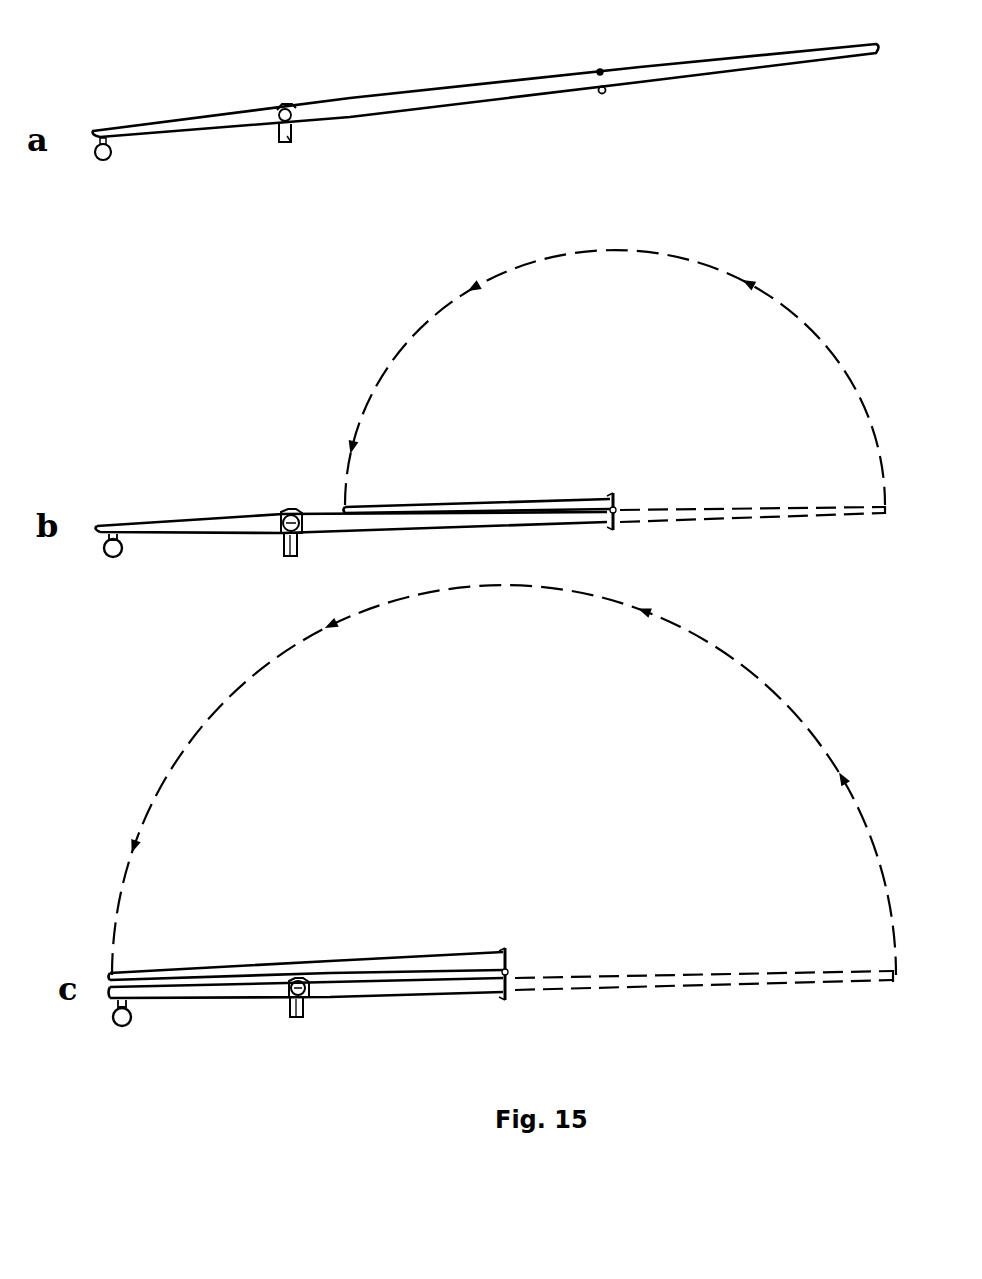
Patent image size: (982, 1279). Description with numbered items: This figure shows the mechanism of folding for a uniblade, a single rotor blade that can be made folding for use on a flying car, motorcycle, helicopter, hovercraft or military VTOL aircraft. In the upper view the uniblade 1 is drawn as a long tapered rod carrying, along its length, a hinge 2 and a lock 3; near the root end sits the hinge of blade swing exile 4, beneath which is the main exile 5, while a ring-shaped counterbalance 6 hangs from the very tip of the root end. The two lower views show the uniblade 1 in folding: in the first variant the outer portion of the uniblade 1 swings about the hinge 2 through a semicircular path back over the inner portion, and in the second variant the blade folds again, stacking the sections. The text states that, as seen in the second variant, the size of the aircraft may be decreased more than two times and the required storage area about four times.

The uniblade 1 is at (403, 91).
The hinge 2 is at (603, 70).
The lock 3 is at (612, 95).
The hinge of blade swing exile 4 is at (291, 108).
The main exile 5 is at (294, 139).
The counterbalance 6 is at (113, 156).